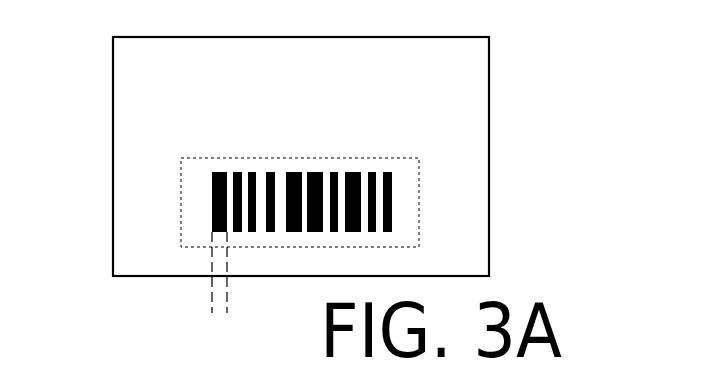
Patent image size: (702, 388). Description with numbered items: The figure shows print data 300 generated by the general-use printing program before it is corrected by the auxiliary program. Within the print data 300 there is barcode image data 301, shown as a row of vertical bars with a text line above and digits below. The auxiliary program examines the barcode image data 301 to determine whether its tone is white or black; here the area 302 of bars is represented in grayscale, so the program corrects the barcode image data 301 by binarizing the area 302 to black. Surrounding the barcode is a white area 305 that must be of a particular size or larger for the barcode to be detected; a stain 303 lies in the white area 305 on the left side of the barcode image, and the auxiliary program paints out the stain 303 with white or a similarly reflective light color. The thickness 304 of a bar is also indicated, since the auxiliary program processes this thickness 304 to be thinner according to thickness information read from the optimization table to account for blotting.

The print data 300 is at (286, 30).
The barcode image data 301 is at (390, 192).
The area of bars 302 is at (222, 186).
The stain 303 is at (208, 207).
The thickness of the bar 304 is at (183, 312).
The white area 305 is at (420, 230).